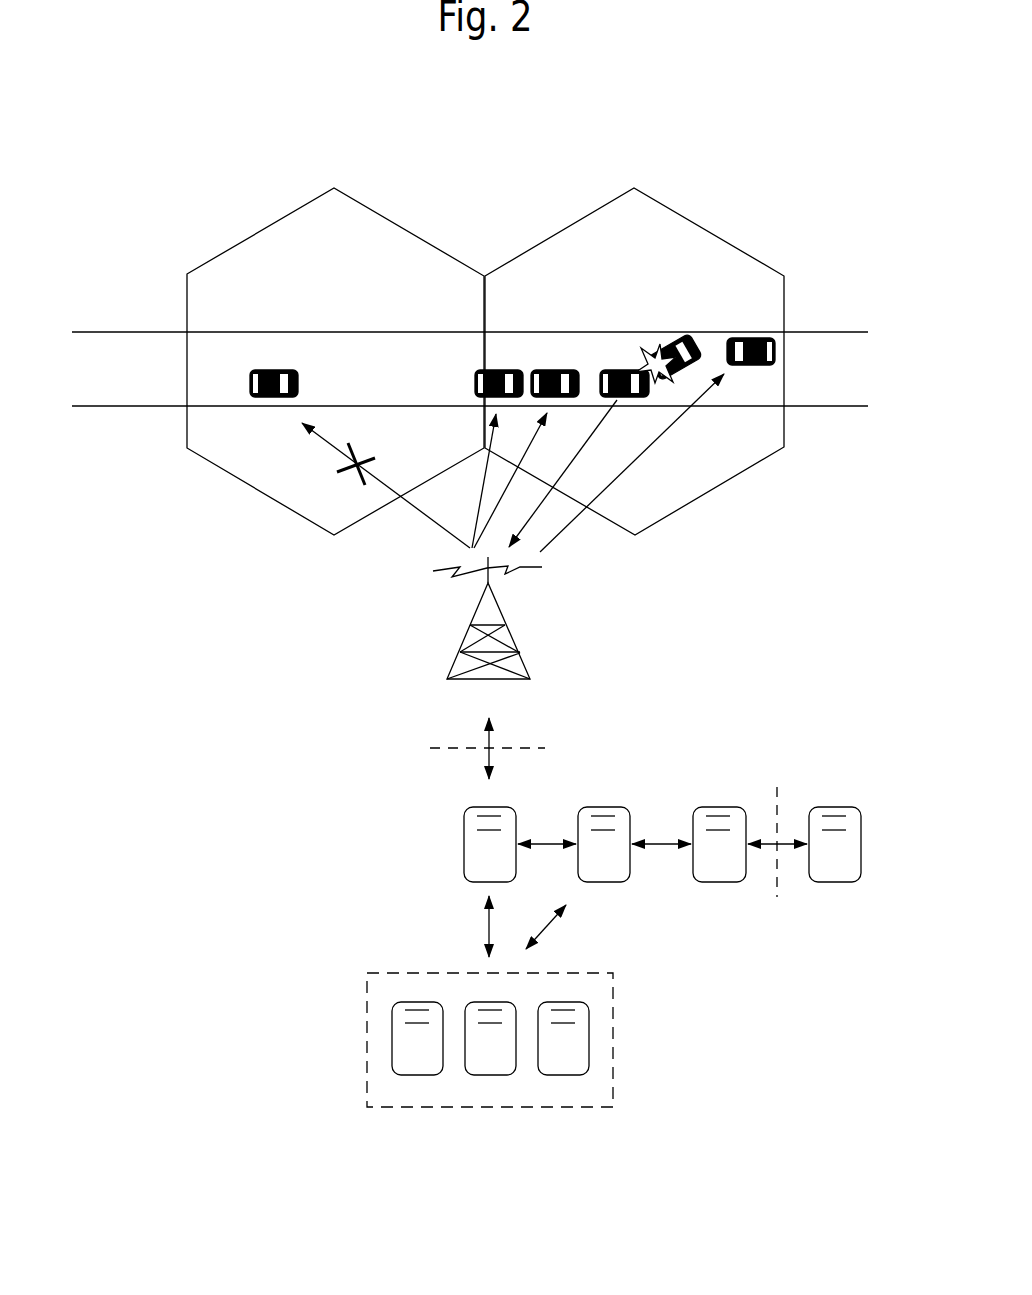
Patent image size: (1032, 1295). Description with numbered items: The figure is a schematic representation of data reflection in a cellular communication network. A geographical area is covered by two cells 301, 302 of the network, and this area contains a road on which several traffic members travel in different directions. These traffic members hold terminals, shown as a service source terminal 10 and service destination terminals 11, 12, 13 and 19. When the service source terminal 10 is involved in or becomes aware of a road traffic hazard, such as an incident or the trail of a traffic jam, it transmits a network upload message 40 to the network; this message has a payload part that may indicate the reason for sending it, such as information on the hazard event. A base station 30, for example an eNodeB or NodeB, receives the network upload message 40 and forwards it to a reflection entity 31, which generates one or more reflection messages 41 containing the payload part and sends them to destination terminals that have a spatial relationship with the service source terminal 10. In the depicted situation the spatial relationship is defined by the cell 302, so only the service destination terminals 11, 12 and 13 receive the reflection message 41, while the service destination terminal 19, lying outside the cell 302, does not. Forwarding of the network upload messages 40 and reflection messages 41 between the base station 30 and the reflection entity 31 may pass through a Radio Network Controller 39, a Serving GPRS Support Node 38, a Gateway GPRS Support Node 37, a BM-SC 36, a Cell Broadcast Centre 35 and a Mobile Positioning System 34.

The cell 301 is at (260, 232).
The cell 302 is at (577, 222).
The service source terminal 10 is at (665, 348).
The service destination terminal 11 is at (551, 370).
The service destination terminal 12 is at (502, 370).
The service destination terminal 13 is at (758, 338).
The service destination terminal 19 is at (276, 398).
The base station 30 is at (450, 657).
The network upload message 40 is at (537, 513).
The reflection message 41 is at (479, 507).
The Radio Network Controller 39 is at (464, 846).
The Serving GPRS Support Node 38 is at (603, 882).
The Gateway GPRS Support Node 37 is at (717, 882).
The reflection entity 31 is at (837, 882).
The BM-SC 36 is at (420, 1075).
The Cell Broadcast Centre 35 is at (493, 1075).
The Mobile Positioning System 34 is at (566, 1075).